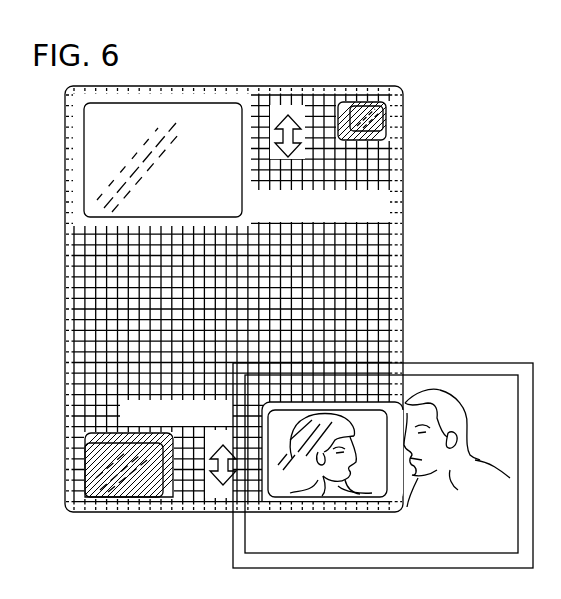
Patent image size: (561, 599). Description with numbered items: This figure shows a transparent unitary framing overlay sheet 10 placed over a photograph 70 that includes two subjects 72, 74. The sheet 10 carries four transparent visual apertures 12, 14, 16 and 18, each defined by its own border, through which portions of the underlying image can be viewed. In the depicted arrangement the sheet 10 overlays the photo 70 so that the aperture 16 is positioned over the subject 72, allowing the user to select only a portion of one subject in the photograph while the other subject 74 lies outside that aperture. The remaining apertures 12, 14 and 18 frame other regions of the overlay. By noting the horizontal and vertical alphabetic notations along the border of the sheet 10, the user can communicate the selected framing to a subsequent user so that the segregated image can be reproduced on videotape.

The transparent unitary framing overlay sheet 10 is at (353, 85).
The transparent visual aperture 12 is at (383, 117).
The transparent visual aperture 14 is at (126, 491).
The transparent visual aperture 16 is at (327, 475).
The transparent visual aperture 18 is at (163, 103).
The photograph 70 is at (383, 443).
The subject 72 is at (357, 456).
The subject 74 is at (472, 431).